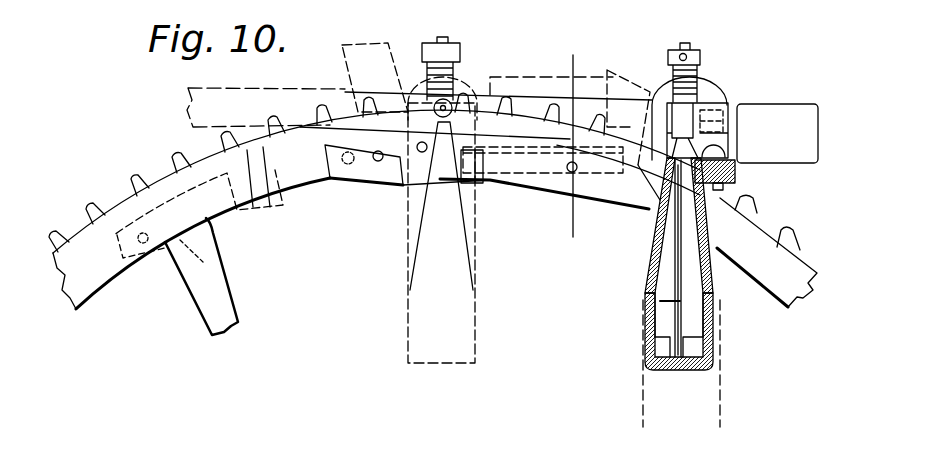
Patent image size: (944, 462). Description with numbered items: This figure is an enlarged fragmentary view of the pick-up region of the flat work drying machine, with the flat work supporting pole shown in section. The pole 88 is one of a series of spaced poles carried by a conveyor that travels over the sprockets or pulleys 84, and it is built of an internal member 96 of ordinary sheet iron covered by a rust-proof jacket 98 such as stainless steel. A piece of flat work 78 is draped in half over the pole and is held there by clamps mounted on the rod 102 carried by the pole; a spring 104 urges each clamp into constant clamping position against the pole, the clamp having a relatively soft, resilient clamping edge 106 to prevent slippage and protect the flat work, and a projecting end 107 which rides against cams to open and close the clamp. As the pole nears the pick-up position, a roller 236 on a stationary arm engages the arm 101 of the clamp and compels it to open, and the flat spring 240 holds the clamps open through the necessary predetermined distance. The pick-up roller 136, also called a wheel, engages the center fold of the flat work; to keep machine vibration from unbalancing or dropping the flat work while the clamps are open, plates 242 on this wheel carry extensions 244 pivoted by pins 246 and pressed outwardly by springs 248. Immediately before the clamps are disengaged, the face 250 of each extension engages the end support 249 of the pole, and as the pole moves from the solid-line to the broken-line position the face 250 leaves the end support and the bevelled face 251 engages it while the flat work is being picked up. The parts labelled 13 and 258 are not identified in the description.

The center line 13 is at (570, 142).
The flat work 78 is at (642, 396).
The sprockets or pulleys 84 is at (96, 288).
The pole 88 is at (406, 329).
The internal member 96 is at (670, 314).
The rust-proof jacket 98 is at (648, 335).
The arm of the clamp 101 is at (783, 108).
The rod 102 is at (660, 301).
The spring 104 is at (699, 78).
The clamping edge 106 is at (737, 174).
The projecting end of the clamp 107 is at (733, 148).
The roller 136 is at (750, 240).
The roller 236 is at (718, 101).
The flat spring 240 is at (552, 76).
The plate 242 is at (395, 175).
The extension 244 is at (355, 242).
The pin 246 is at (470, 185).
The spring 248 is at (567, 173).
The end support of the pole 249 is at (652, 188).
The face of the extension 250 is at (388, 62).
The bevelled face 251 is at (407, 145).
The bar 258 is at (316, 91).